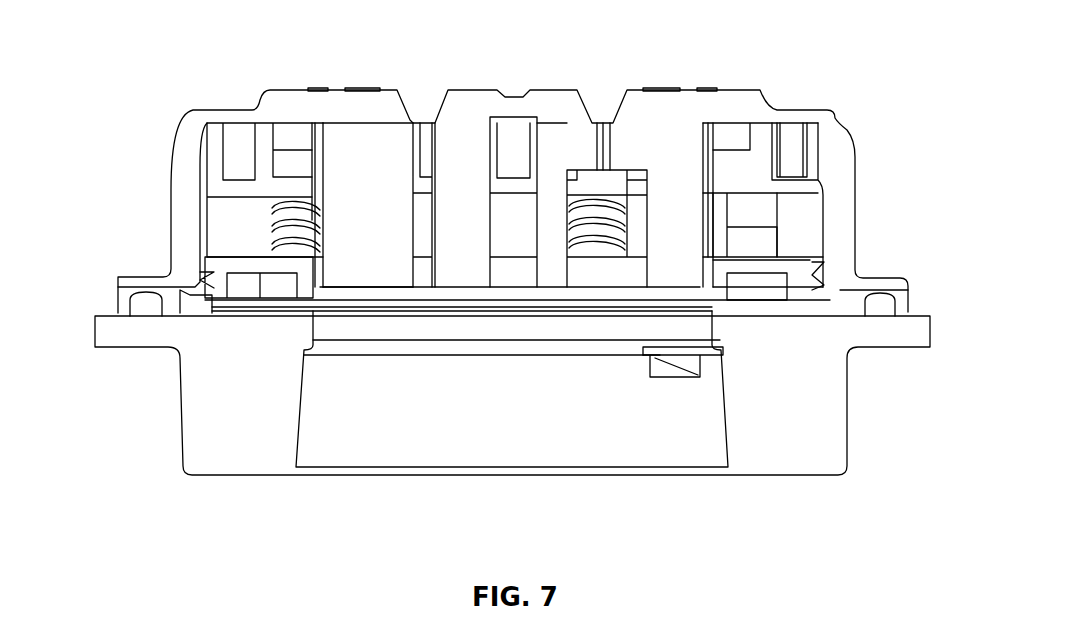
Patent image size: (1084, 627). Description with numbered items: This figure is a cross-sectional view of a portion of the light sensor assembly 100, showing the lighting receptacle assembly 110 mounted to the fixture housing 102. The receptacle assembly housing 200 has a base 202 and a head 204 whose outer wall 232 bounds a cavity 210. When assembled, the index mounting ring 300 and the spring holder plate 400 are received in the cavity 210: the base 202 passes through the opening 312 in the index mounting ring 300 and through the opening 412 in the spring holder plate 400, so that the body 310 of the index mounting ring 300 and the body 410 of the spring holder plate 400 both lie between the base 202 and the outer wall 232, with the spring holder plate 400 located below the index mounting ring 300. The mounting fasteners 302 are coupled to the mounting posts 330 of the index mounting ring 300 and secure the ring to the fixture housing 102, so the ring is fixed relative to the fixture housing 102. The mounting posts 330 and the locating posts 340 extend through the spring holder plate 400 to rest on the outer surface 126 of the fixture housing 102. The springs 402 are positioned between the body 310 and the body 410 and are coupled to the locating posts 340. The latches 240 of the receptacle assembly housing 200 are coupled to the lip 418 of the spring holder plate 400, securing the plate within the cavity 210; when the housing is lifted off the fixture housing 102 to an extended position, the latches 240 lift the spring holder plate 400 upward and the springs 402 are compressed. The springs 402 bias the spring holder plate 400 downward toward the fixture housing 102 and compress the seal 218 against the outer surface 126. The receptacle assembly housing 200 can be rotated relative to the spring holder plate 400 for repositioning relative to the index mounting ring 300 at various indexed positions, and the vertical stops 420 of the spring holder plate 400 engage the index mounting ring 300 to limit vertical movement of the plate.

The light sensor assembly 100 is at (856, 45).
The fixture housing 102 is at (893, 393).
The lighting receptacle assembly 110 is at (356, 60).
The outer surface 126 is at (113, 313).
The receptacle assembly housing 200 is at (856, 116).
The base 202 is at (355, 268).
The head 204 is at (268, 104).
The cavity 210 is at (808, 217).
The seal 218 is at (134, 325).
The outer wall 232 is at (180, 185).
The latches 240 is at (195, 272).
The index mounting ring 300 is at (225, 193).
The mounting fasteners 302 is at (668, 380).
The body 310 is at (765, 137).
The opening 312 is at (706, 112).
The mounting posts 330 is at (715, 218).
The locating posts 340 is at (600, 220).
The spring holder plate 400 is at (298, 292).
The springs 402 is at (595, 207).
The body 410 is at (758, 263).
The opening 412 is at (653, 363).
The lip 418 is at (812, 258).
The vertical stops 420 is at (712, 217).